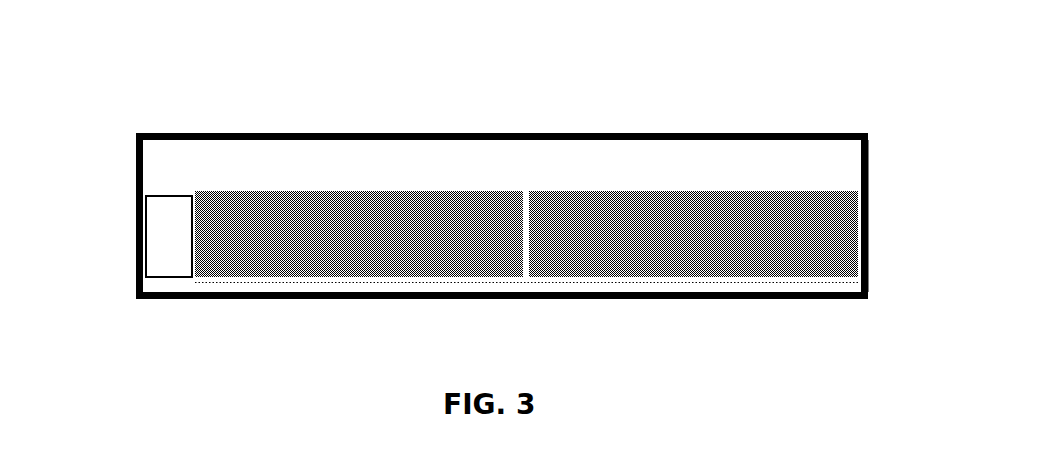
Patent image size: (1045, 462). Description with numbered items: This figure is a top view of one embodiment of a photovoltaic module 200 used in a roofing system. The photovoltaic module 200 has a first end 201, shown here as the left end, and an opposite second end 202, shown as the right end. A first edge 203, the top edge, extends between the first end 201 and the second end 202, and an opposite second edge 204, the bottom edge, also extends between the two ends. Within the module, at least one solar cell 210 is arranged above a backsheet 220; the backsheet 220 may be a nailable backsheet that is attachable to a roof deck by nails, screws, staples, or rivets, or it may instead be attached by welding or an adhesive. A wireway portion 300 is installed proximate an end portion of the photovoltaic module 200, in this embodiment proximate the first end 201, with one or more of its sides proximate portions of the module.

The photovoltaic module 200 is at (297, 333).
The first end 201 is at (136, 213).
The second end 202 is at (870, 185).
The first edge 203 is at (455, 128).
The second edge 204 is at (526, 298).
The solar cell 210 is at (275, 193).
The backsheet 220 is at (643, 163).
The wireway portion 300 is at (158, 263).